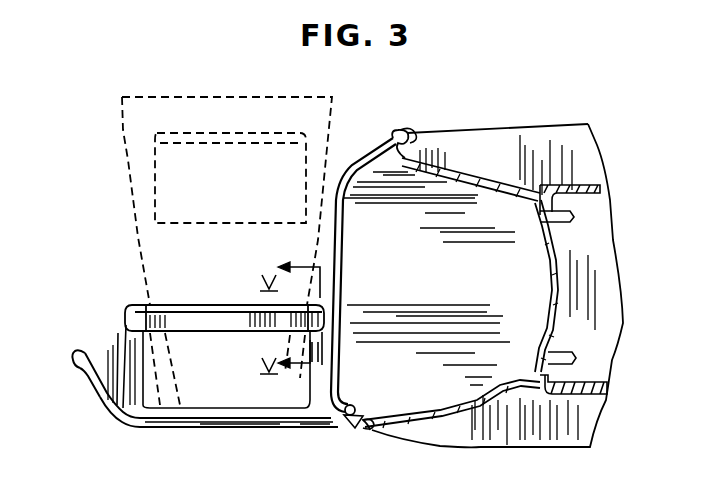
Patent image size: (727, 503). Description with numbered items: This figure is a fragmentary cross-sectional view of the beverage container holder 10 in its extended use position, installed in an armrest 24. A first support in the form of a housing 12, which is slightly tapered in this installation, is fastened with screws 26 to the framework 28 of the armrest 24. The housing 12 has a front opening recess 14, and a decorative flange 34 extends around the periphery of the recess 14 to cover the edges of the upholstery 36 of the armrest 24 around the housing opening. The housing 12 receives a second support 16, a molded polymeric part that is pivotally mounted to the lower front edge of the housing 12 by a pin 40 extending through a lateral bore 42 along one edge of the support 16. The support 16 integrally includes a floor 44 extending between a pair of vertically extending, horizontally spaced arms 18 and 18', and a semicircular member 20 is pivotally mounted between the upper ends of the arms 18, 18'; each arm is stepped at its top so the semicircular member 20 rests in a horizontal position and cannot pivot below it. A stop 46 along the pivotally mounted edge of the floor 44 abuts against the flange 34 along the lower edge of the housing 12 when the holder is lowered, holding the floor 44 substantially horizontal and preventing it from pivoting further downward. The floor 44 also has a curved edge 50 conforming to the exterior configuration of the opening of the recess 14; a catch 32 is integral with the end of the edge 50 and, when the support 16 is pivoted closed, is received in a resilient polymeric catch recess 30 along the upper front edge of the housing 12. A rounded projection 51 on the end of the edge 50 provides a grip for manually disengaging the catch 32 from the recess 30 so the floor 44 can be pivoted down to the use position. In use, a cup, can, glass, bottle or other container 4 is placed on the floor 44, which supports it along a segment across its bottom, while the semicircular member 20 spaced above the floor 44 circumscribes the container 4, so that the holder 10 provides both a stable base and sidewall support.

The beverage container holder 10 is at (356, 126).
The container 4 is at (137, 233).
The housing 12 is at (500, 125).
The recess 14 is at (456, 410).
The second support 16 is at (103, 418).
The arm 18 is at (340, 304).
The arm 18' is at (200, 362).
The semicircular member 20 is at (222, 318).
The armrest 24 is at (542, 125).
The screws 26 is at (568, 222).
The framework 28 is at (572, 183).
The recess 30 is at (398, 136).
The catch 32 is at (77, 353).
The decorative flange 34 is at (410, 136).
The upholstery 36 is at (470, 166).
The pin 40 is at (345, 403).
The lateral bore 42 is at (455, 402).
The floor 44 is at (234, 424).
The stop 46 is at (348, 427).
The curved edge 50 is at (95, 394).
The rounded projection 51 is at (76, 369).